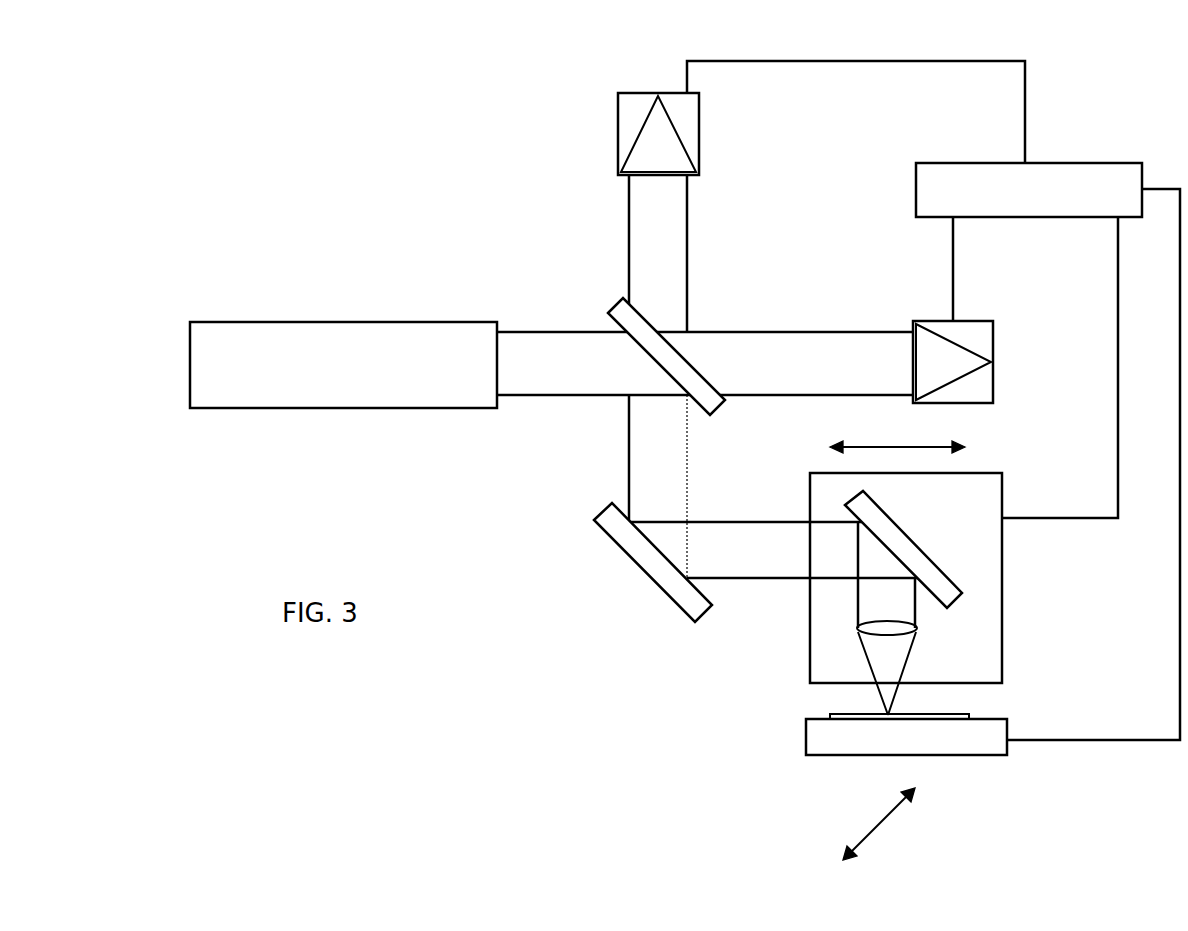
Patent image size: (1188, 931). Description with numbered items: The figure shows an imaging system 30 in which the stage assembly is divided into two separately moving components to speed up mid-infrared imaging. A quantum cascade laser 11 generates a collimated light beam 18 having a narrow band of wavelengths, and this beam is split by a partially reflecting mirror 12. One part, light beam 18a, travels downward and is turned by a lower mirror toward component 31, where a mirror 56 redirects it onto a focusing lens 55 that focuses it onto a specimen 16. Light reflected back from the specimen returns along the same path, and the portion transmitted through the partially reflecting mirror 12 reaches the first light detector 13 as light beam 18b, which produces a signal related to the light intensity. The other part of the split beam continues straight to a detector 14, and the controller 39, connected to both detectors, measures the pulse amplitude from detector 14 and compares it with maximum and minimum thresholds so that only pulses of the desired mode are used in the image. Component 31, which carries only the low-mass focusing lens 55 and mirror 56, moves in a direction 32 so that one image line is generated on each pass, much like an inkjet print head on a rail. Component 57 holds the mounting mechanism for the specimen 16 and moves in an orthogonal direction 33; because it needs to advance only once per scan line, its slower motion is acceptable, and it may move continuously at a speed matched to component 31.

The imaging system 30 is at (345, 200).
The quantum cascade laser 11 is at (330, 410).
The collimated light beam 18 is at (548, 336).
The light beam 18a is at (630, 457).
The light beam 18b is at (680, 246).
The partially reflecting mirror 12 is at (707, 412).
The first light detector 13 is at (699, 137).
The detector 14 is at (993, 385).
The controller 39 is at (1020, 217).
The direction 32 is at (890, 440).
The component 31 is at (1002, 582).
The mirror 56 is at (885, 523).
The focusing lens 55 is at (912, 633).
The specimen 16 is at (838, 717).
The component 57 is at (806, 732).
The direction 33 is at (880, 825).